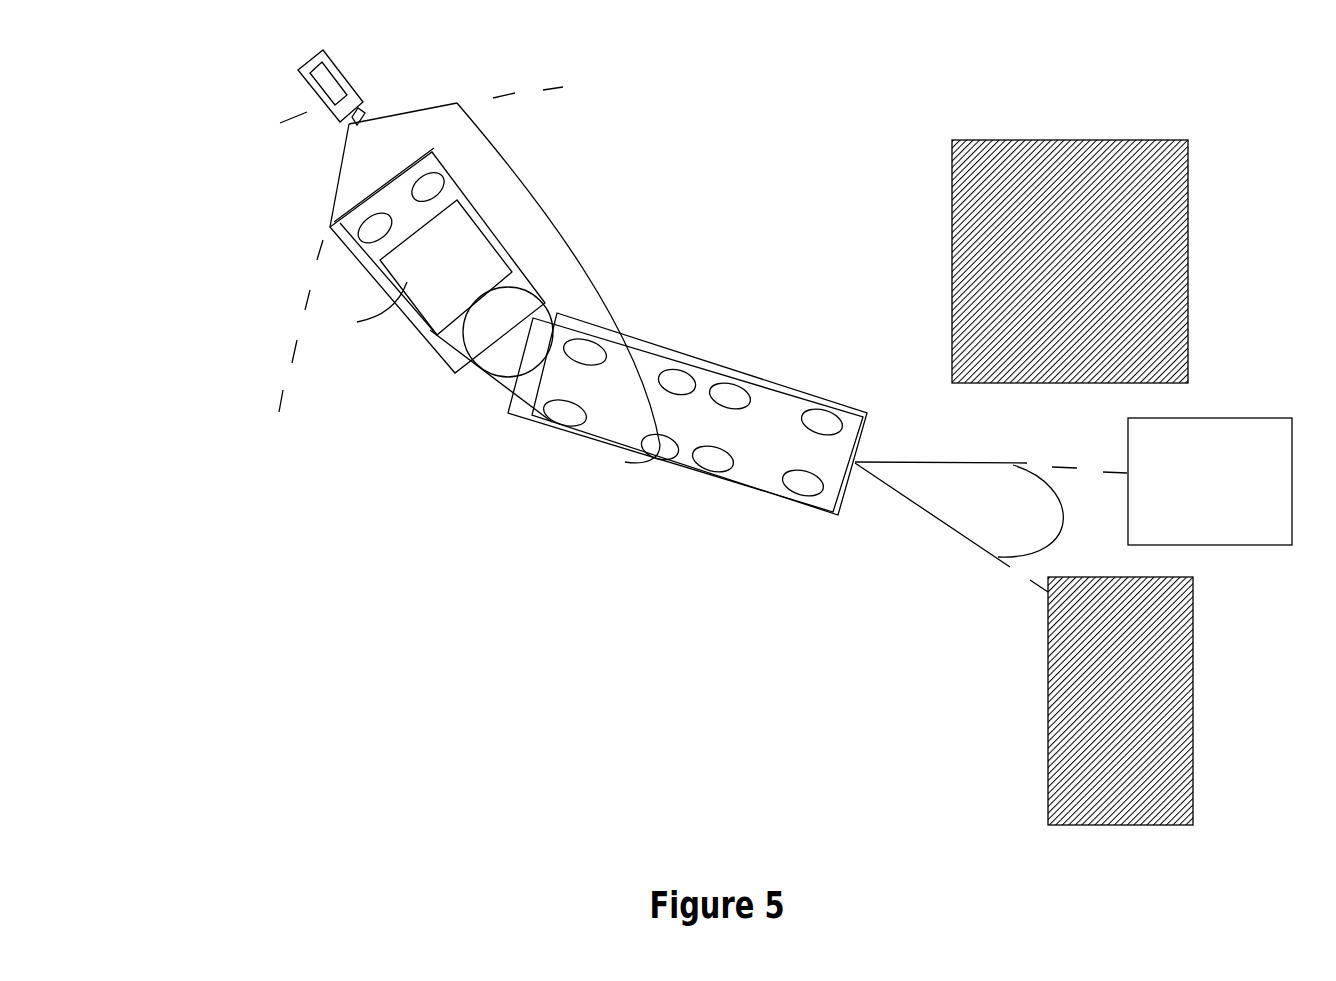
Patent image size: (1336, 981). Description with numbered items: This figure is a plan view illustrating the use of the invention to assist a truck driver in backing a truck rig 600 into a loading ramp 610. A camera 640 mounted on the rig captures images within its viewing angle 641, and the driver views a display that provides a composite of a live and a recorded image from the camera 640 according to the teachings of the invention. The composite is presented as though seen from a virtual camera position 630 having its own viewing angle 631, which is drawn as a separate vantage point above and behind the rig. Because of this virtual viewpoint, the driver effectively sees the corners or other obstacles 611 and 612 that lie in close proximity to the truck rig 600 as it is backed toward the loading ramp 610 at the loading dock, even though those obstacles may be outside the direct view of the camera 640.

The truck rig 600 is at (768, 447).
The loading ramp 610 is at (1238, 423).
The corner or other obstacle 611 is at (953, 343).
The corner or other obstacle 612 is at (1048, 592).
The virtual camera position 630 is at (307, 111).
The viewing angle of virtual camera position 631 is at (300, 383).
The camera 640 is at (860, 408).
The viewing angle of camera 641 is at (938, 505).